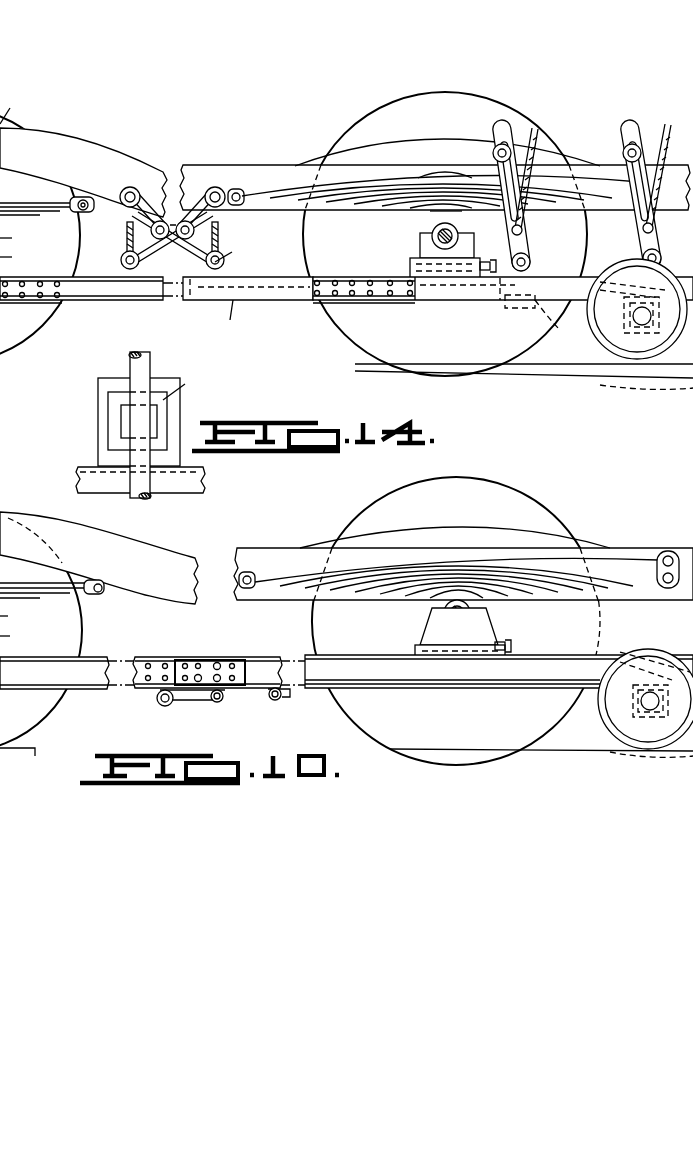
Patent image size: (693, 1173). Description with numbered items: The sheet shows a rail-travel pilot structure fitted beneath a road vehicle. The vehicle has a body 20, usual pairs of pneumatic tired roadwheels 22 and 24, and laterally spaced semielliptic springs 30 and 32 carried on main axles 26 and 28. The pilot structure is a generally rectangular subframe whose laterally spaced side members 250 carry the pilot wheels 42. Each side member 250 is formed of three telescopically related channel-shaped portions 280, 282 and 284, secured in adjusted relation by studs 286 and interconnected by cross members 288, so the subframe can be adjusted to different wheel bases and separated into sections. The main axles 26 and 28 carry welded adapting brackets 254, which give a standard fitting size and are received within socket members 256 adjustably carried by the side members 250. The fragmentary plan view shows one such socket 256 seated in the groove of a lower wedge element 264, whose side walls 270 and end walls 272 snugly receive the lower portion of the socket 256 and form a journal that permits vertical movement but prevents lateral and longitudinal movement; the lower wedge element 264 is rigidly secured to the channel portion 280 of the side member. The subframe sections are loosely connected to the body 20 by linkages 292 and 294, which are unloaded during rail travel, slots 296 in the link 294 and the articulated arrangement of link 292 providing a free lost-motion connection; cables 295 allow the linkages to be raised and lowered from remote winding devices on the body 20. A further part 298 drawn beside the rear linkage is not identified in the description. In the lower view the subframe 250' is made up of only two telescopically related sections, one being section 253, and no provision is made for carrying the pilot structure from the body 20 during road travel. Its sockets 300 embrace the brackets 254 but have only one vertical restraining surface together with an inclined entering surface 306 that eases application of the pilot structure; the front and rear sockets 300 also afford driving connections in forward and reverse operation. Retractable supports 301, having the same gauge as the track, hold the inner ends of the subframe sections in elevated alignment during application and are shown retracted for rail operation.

In FIG. 9, the body 20 is at (103, 160).
In FIG. 10, the body 20 is at (125, 550).
In FIG. 9, the pneumatic tired roadwheels 22 is at (10, 104).
In FIG. 9, the pneumatic tired roadwheels 24 is at (482, 103).
In FIG. 10, the pneumatic tired roadwheels 24 is at (456, 621).
In FIG. 14, the main axle 26 is at (146, 362).
In FIG. 9, the main axle 28 is at (524, 232).
In FIG. 10, the main axle 28 is at (468, 610).
In FIG. 9, the semielliptic spring 30 is at (45, 200).
In FIG. 10, the semielliptic spring 30 is at (52, 581).
In FIG. 9, the semielliptic spring 32 is at (398, 172).
In FIG. 10, the semielliptic spring 32 is at (462, 568).
In FIG. 9, the pilot wheels 42 is at (635, 350).
In FIG. 10, the pilot wheels 42 is at (660, 655).
In FIG. 9, the side member 250 is at (233, 315).
In FIG. 10, the subframe 250' is at (207, 651).
In FIG. 10, the subframe section 253 is at (480, 685).
In FIG. 9, the adapting bracket 254 is at (17, 241).
In FIG. 14, the adapting bracket 254 is at (150, 418).
In FIG. 10, the adapting bracket 254 is at (14, 617).
In FIG. 9, the socket member 256 is at (418, 238).
In FIG. 14, the socket member 256 is at (196, 383).
In FIG. 9, the wedge element 264 is at (408, 268).
In FIG. 14, the side walls 270 is at (185, 502).
In FIG. 14, the end walls 272 is at (200, 418).
In FIG. 14, the channel-shaped portion 280 is at (83, 467).
In FIG. 9, the channel-shaped portion 282 is at (130, 302).
In FIG. 9, the channel-shaped portion 284 is at (470, 302).
In FIG. 9, the studs 286 is at (362, 326).
In FIG. 10, the studs 286 is at (208, 660).
In FIG. 9, the cross members 288 is at (235, 288).
In FIG. 9, the linkage 292 is at (158, 247).
In FIG. 9, the linkage 294 is at (528, 250).
In FIG. 9, the cables 295 is at (232, 252).
In FIG. 9, the slots 296 is at (628, 130).
In FIG. 9, the rod 298 is at (680, 104).
In FIG. 10, the socket 300 is at (490, 635).
In FIG. 10, the retractable supports 301 is at (300, 714).
In FIG. 10, the inclined entering surface 306 is at (18, 637).